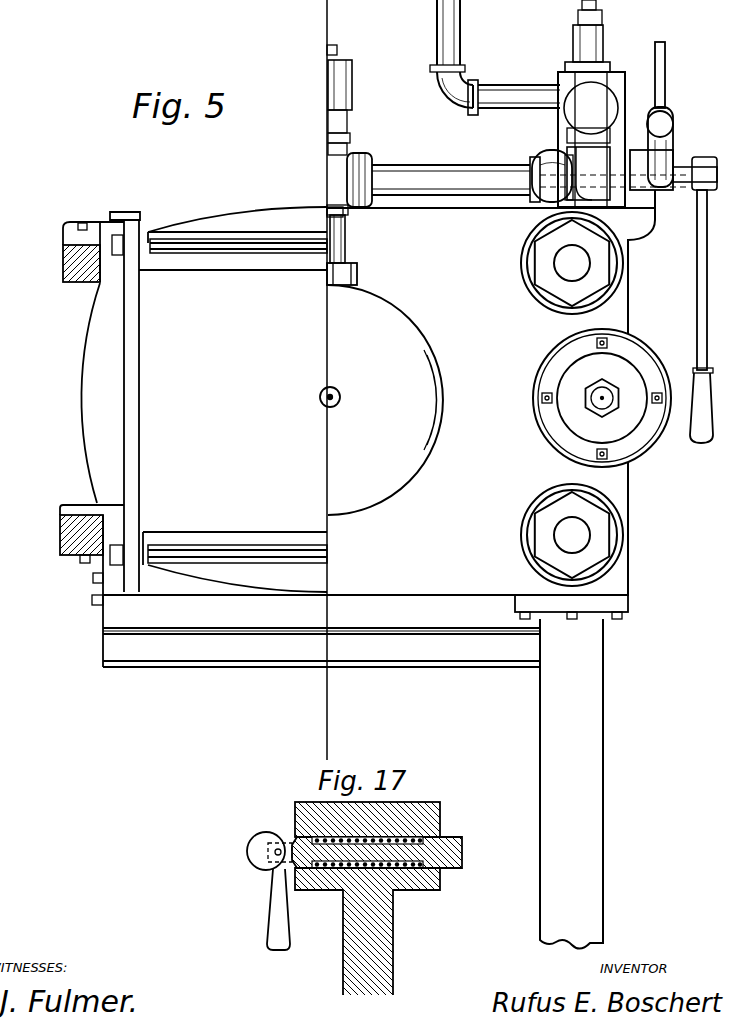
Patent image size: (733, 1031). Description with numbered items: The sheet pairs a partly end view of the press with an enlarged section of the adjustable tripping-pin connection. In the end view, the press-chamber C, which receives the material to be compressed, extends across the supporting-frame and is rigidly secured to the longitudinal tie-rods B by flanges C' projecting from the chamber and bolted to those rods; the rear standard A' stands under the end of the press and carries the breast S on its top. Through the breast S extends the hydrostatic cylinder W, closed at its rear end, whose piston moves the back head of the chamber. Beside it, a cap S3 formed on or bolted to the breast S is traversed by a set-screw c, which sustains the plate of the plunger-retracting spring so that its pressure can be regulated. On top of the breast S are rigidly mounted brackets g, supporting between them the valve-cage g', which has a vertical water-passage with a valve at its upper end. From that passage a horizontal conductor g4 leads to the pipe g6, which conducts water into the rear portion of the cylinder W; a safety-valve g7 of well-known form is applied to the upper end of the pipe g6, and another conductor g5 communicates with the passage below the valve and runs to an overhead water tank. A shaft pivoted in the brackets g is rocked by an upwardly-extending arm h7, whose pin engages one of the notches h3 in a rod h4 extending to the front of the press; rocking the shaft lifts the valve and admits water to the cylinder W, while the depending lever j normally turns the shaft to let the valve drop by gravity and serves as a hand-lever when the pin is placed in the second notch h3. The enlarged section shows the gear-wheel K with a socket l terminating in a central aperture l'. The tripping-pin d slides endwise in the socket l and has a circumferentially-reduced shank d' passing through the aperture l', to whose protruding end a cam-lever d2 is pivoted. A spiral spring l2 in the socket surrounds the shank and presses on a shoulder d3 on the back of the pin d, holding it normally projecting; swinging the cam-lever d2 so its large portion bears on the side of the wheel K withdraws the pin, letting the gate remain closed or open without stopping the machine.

In FIG. 5, the breast S is at (491, 392).
In FIG. 5, the press-chamber C is at (354, 401).
In FIG. 5, the flanges C' is at (73, 444).
In FIG. 5, the longitudinal rods B is at (62, 272).
In FIG. 5, the hydrostatic cylinder W is at (396, 402).
In FIG. 5, the cap S3 is at (642, 436).
In FIG. 5, the set-screw c is at (595, 394).
In FIG. 5, the rear standard A' is at (365, 772).
In FIG. 5, the brackets g is at (599, 154).
In FIG. 5, the valve-cage g' is at (600, 103).
In FIG. 5, the conductor g4 is at (451, 165).
In FIG. 5, the conductor or pipe g5 is at (518, 78).
In FIG. 5, the pipe g6 is at (340, 230).
In FIG. 5, the safety-valve g7 is at (345, 68).
In FIG. 5, the notches h3 is at (650, 190).
In FIG. 5, the rod h4 is at (665, 82).
In FIG. 5, the arm h7 is at (673, 136).
In FIG. 5, the depending lever j is at (697, 268).
In FIG. 17, the socket l is at (367, 806).
In FIG. 17, the central aperture l' is at (281, 831).
In FIG. 17, the spiral spring l2 is at (339, 875).
In FIG. 17, the tripping-pin d is at (392, 850).
In FIG. 17, the shank d' is at (309, 897).
In FIG. 17, the cam-lever d2 is at (270, 897).
In FIG. 17, the shoulder d3 is at (420, 870).
In FIG. 17, the gear-wheel K is at (393, 975).